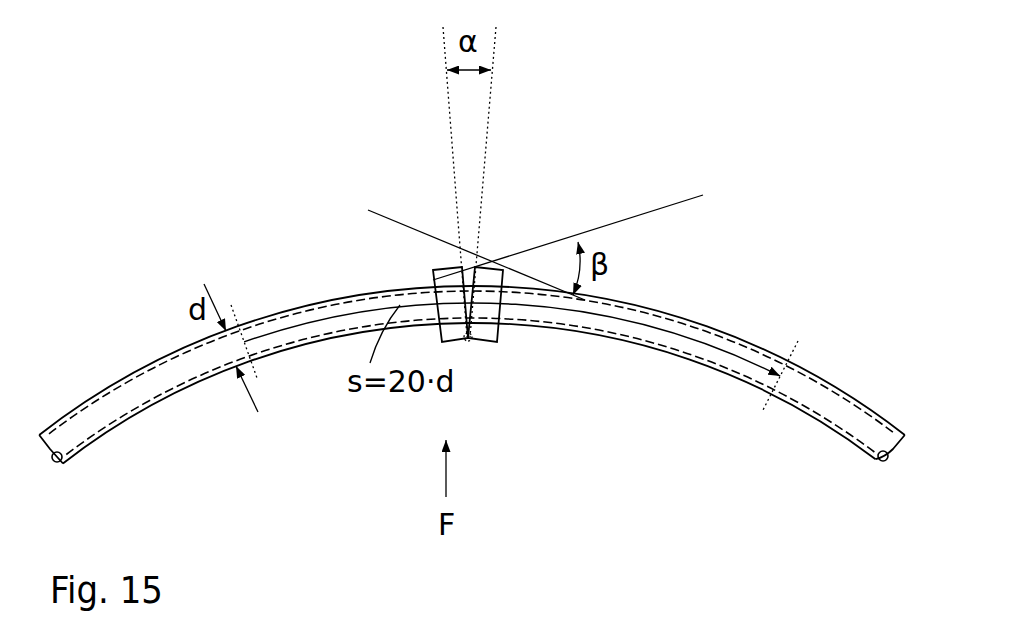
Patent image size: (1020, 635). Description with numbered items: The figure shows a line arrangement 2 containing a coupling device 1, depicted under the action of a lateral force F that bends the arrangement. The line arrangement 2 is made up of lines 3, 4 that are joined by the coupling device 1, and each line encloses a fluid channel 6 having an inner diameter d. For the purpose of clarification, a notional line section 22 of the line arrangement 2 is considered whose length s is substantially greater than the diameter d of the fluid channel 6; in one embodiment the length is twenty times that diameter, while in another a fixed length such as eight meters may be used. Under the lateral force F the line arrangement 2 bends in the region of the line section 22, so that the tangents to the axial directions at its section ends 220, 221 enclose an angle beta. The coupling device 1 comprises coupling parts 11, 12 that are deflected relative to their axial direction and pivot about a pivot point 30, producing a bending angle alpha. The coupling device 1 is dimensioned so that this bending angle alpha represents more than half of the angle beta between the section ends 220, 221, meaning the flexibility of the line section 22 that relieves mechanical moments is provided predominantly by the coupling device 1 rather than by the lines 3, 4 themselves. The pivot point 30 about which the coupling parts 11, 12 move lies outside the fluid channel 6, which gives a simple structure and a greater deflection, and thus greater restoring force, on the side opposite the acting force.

The coupling device 1 is at (474, 367).
The line arrangement 2 is at (472, 322).
The line 3 is at (130, 375).
The line 4 is at (800, 365).
The fluid channel 6 is at (160, 370).
The coupling part 11 is at (428, 269).
The coupling part 12 is at (492, 332).
The line section 22 is at (302, 356).
The pivot point 30 is at (468, 340).
The section end 220 is at (240, 315).
The section end 221 is at (795, 341).